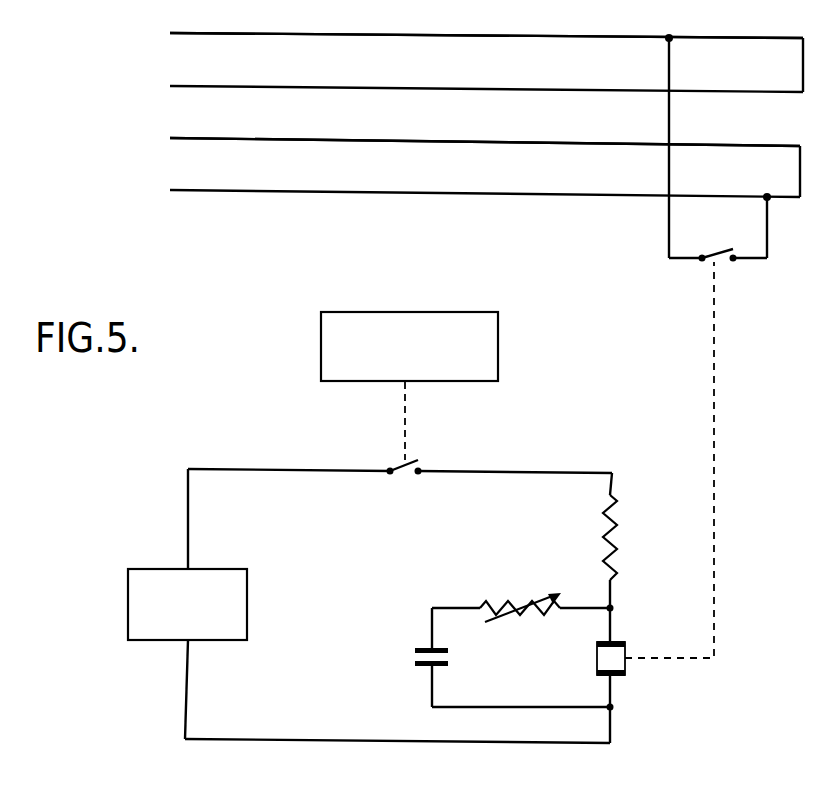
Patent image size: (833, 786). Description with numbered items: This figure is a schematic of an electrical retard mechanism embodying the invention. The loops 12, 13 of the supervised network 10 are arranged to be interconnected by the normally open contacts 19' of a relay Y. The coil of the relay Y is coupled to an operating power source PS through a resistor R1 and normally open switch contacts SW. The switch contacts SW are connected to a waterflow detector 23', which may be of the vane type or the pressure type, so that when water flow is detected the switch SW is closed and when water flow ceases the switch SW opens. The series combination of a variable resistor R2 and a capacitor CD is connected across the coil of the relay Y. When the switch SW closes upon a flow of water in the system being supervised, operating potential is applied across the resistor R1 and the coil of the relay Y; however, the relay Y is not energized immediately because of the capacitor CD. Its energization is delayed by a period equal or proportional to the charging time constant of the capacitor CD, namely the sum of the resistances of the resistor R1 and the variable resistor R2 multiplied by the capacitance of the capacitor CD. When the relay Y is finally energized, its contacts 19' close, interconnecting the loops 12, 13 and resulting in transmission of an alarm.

The network 10 is at (150, 117).
The loop 12 is at (407, 35).
The loop 13 is at (407, 140).
The normally open contacts 19' is at (718, 148).
The waterflow detector 23' is at (409, 367).
The switch contacts SW is at (401, 474).
The resistor R1 is at (607, 538).
The variable resistor R2 is at (511, 605).
The capacitor CD is at (415, 656).
The relay Y is at (597, 659).
The power source PS is at (187, 604).